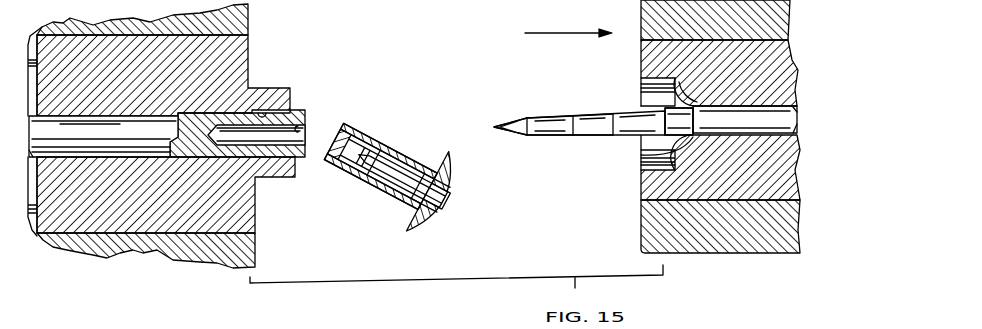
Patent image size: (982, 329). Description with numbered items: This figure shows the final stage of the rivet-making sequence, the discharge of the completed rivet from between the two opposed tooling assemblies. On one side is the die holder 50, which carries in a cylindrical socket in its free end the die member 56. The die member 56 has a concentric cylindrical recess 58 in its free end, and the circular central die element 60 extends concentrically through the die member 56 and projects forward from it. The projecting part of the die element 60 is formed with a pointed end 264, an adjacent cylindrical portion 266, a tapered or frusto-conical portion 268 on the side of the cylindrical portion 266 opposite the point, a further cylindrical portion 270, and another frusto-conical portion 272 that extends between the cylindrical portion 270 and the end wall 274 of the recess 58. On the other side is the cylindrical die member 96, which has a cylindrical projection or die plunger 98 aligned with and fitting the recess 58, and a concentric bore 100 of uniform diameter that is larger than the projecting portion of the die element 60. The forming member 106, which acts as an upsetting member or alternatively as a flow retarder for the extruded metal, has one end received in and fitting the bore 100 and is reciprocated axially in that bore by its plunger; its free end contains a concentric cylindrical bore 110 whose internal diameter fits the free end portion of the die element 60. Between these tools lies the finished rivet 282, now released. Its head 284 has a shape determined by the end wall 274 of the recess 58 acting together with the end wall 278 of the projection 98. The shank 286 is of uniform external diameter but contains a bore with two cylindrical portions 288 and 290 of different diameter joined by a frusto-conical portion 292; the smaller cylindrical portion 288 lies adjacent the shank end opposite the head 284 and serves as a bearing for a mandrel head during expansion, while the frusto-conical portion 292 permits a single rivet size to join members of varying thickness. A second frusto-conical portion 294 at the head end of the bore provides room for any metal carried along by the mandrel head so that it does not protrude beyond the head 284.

The die holder 50 is at (652, 9).
The die member 56 is at (652, 187).
The cylindrical recess 58 is at (640, 86).
The central die element 60 is at (568, 108).
The die member 96 is at (240, 200).
The die plunger 98 is at (290, 96).
The bore 100 is at (264, 111).
The forming member 106 is at (112, 148).
The cylindrical bore 110 is at (300, 126).
The pointed end 264 is at (515, 124).
The cylindrical portion 266 is at (556, 132).
The frusto-conical portion 268 is at (589, 134).
The cylindrical portion 270 is at (628, 115).
The frusto-conical portion 272 is at (675, 121).
The end wall 274 is at (662, 149).
The end wall 278 is at (294, 169).
The finished rivet 282 is at (413, 152).
The head 284 is at (454, 172).
The shank 286 is at (363, 145).
The cylindrical portion 288 is at (334, 136).
The cylindrical portion 290 is at (395, 179).
The frusto-conical portion 292 is at (362, 166).
The frusto-conical portion 294 is at (446, 193).